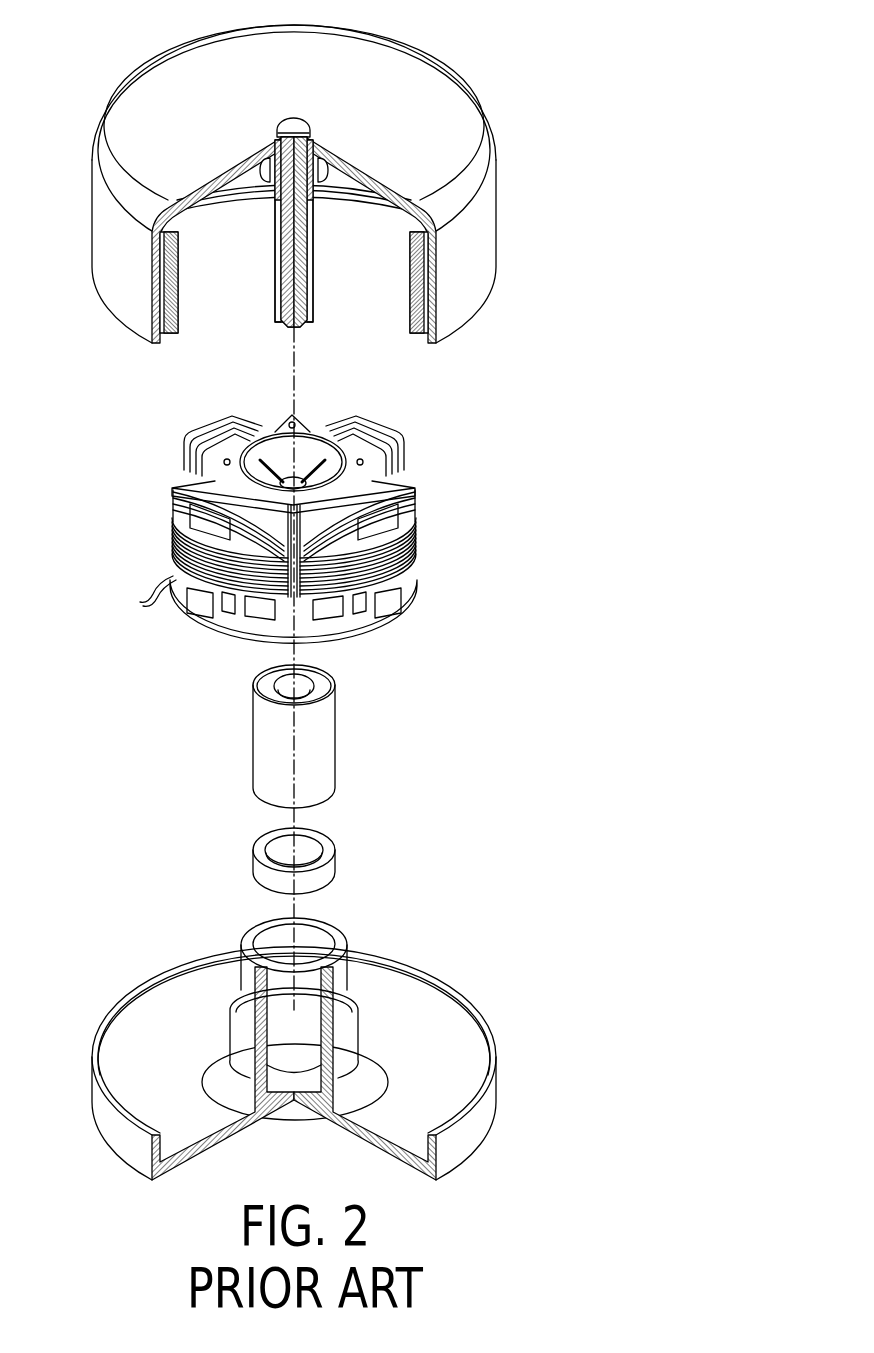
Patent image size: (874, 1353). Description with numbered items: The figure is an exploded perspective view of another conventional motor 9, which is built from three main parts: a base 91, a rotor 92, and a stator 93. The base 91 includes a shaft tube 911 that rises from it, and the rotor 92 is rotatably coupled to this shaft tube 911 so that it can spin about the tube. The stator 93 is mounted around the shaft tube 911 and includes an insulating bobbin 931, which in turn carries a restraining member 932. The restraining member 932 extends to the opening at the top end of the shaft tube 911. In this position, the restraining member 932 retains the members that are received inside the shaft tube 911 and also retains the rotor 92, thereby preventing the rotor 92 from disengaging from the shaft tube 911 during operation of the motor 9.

The conventional motor 9 is at (92, 88).
The base 91 is at (462, 1135).
The shaft tube 911 is at (353, 1037).
The rotor 92 is at (440, 100).
The stator 93 is at (437, 551).
The insulating bobbin 931 is at (388, 512).
The restraining member 932 is at (253, 470).